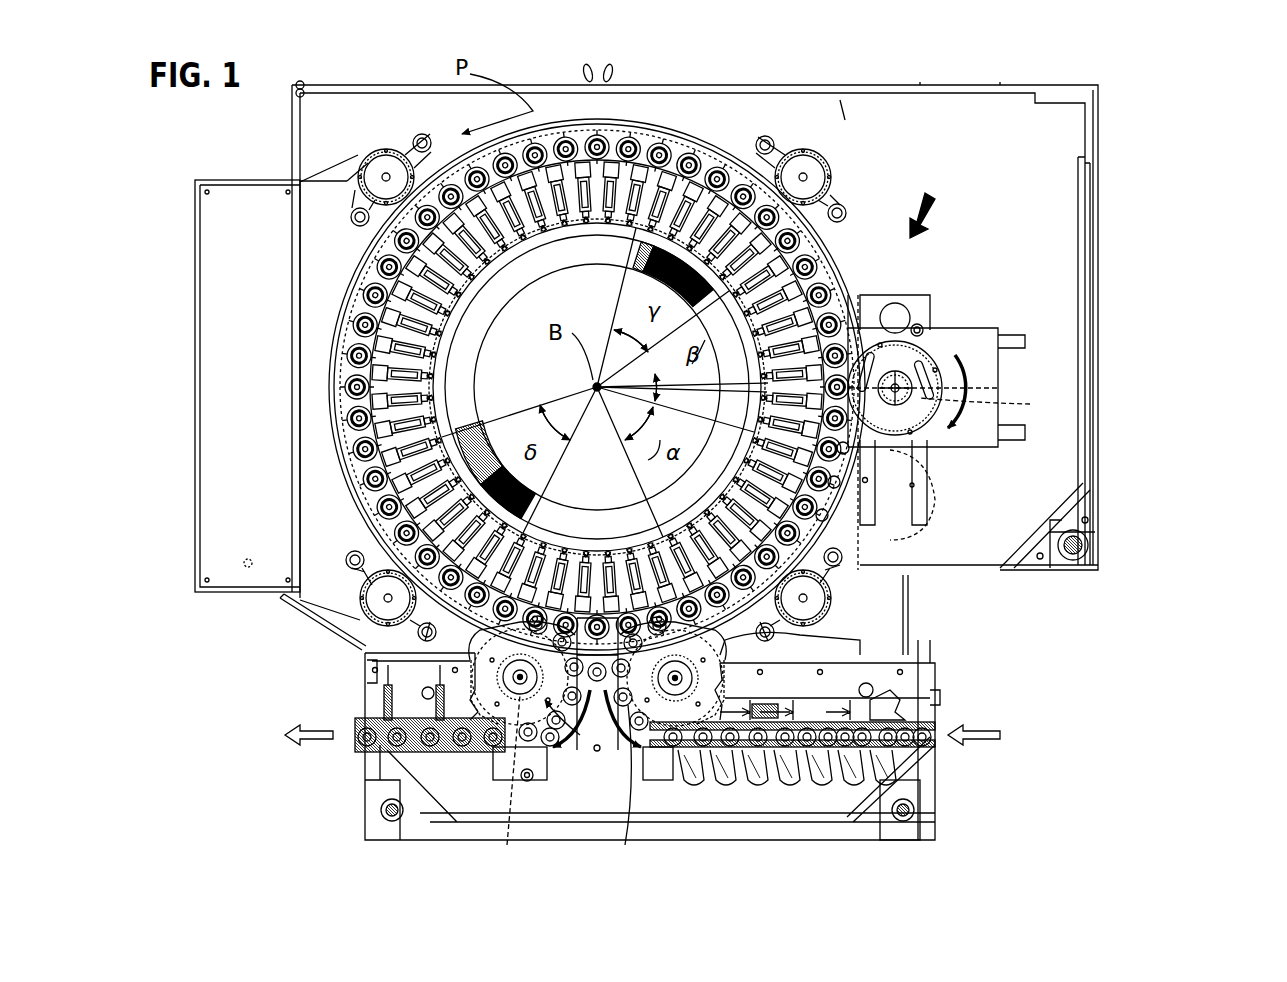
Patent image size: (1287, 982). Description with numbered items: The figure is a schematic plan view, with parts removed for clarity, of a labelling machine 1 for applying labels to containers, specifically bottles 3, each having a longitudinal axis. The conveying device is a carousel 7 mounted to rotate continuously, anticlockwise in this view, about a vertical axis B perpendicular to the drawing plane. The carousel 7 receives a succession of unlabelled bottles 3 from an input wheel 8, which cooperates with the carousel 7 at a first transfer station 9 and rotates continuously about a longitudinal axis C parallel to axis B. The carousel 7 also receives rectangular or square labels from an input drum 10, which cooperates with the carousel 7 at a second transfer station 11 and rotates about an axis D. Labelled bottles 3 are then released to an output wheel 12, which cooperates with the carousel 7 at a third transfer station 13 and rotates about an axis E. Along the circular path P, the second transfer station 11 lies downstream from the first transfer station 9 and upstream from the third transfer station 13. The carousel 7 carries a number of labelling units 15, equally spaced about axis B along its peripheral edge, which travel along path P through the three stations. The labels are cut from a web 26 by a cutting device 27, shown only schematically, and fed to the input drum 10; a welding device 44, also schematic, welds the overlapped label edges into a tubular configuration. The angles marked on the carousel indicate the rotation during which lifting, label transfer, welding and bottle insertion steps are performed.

The labelling machine 1 is at (1143, 170).
The bottles 3 is at (759, 755).
The carousel 7 is at (322, 271).
The input wheel 8 is at (663, 714).
The first transfer station 9 is at (689, 626).
The input drum 10 is at (950, 408).
The second transfer station 11 is at (873, 392).
The output wheel 12 is at (564, 706).
The third transfer station 13 is at (356, 656).
The labelling units 15 is at (853, 455).
The web 26 is at (878, 318).
The cutting device 27 is at (934, 303).
The welding device 44 is at (665, 205).